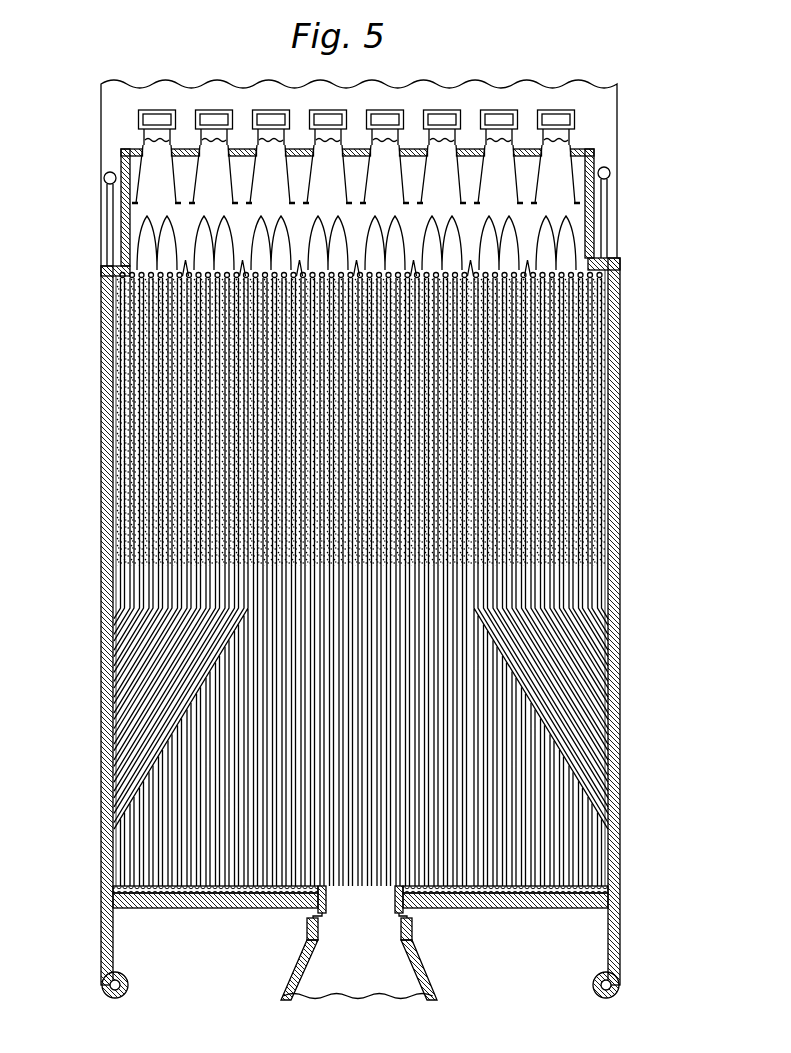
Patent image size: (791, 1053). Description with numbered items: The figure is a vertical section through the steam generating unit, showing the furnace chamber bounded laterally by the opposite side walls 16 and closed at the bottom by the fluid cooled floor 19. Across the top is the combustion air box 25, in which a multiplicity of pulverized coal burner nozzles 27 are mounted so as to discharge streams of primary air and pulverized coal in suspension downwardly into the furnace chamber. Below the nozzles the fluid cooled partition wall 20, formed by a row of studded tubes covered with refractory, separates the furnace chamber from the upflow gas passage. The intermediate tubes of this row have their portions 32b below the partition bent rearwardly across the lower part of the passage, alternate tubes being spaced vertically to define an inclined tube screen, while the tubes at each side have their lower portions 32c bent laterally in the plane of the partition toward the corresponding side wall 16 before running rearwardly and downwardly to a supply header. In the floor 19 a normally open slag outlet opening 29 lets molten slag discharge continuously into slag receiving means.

The side walls 16 is at (96, 545).
The floor 19 is at (214, 902).
The fluid cooled partition wall 20 is at (345, 437).
The combustion air box 25 is at (588, 152).
The pulverized coal burner nozzles 27 is at (191, 188).
The slag outlet opening 29 is at (356, 882).
The tube portions 32b is at (452, 744).
The lower tube portions 32c is at (141, 765).